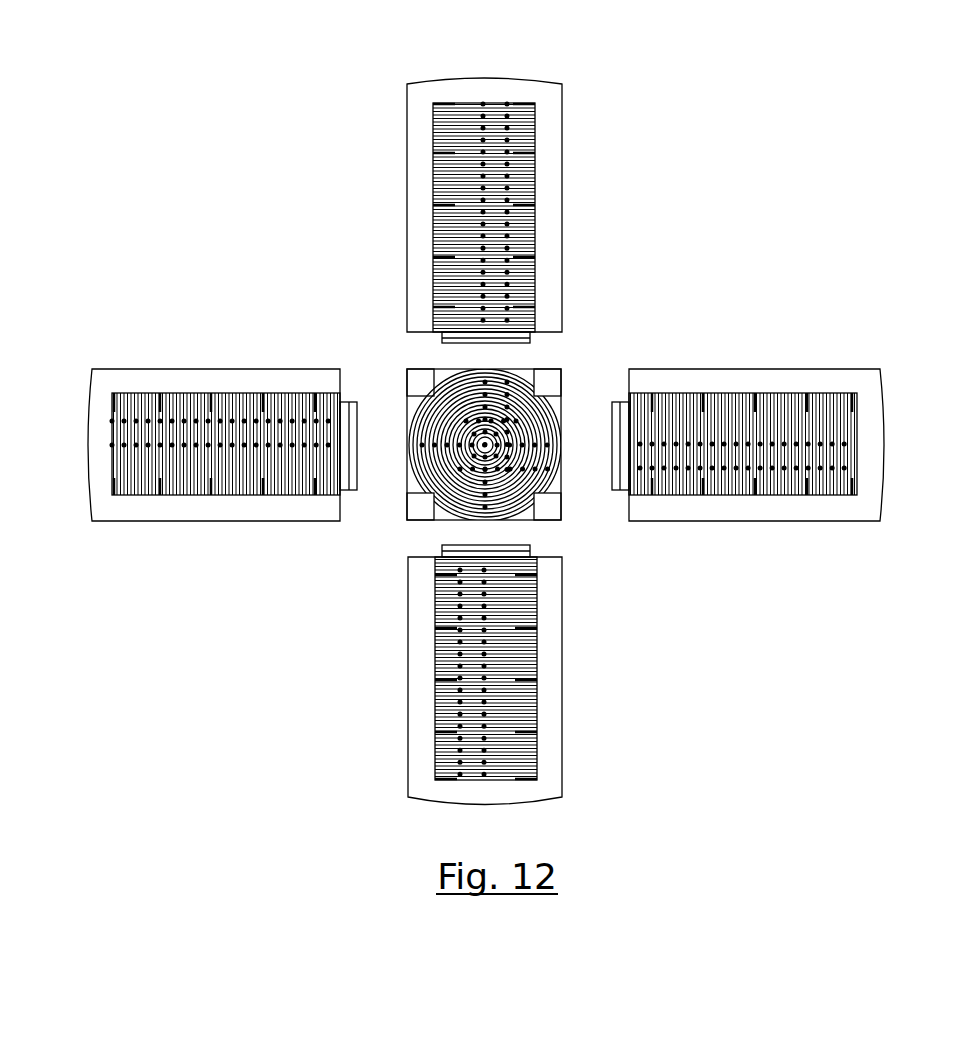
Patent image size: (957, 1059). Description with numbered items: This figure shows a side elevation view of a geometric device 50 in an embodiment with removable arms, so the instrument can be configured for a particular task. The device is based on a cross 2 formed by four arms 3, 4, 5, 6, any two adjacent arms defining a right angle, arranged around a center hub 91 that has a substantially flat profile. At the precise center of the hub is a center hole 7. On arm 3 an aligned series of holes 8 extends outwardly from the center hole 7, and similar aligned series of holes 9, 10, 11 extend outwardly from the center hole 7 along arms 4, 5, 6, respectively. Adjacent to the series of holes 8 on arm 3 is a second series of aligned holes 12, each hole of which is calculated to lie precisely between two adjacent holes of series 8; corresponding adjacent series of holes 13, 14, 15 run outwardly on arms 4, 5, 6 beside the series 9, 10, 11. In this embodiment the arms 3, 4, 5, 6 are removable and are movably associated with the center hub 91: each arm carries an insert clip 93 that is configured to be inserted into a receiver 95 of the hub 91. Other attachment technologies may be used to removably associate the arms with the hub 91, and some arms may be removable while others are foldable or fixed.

The sensor device 50 is at (728, 166).
The cross 2 is at (545, 210).
The arm 3 is at (525, 118).
The arm 4 is at (828, 397).
The arm 5 is at (527, 755).
The arm 6 is at (140, 475).
The center hole 7 is at (485, 445).
The series of holes 8 is at (483, 102).
The series of holes 9 is at (862, 444).
The series of holes 10 is at (484, 780).
The series of holes 11 is at (110, 445).
The series of aligned holes 12 is at (507, 105).
The series of holes 13 is at (855, 468).
The series of holes 14 is at (460, 775).
The series of holes 15 is at (112, 420).
The center hub 91 is at (550, 512).
The insert clip 93 is at (350, 400).
The receiver 95 is at (405, 455).